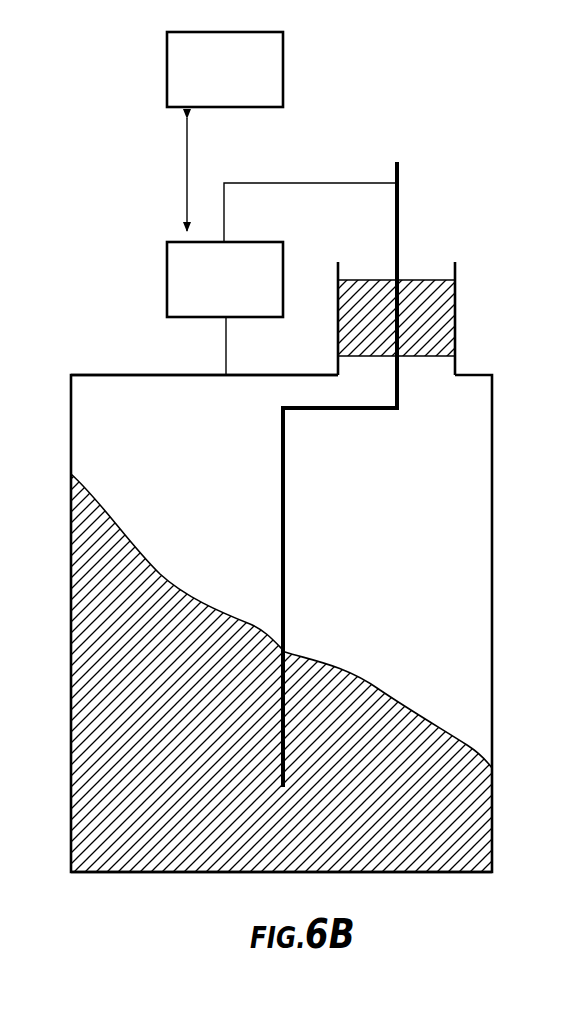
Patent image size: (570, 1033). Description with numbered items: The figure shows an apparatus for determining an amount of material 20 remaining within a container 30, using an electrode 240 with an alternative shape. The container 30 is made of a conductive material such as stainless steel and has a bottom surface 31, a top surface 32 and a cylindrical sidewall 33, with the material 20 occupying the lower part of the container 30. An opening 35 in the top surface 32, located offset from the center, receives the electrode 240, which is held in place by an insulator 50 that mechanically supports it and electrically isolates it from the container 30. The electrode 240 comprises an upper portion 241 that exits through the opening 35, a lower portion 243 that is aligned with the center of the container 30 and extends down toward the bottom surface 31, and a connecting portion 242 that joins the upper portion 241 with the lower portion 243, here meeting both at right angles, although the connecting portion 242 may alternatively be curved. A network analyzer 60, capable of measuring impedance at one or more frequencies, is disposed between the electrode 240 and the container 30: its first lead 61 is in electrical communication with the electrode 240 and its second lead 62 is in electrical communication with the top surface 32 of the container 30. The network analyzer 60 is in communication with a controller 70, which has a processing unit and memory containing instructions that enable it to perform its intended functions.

The material 20 is at (267, 673).
The container 30 is at (314, 623).
The bottom surface 31 is at (281, 897).
The top surface 32 is at (204, 354).
The cylindrical sidewall 33 is at (265, 608).
The opening 35 is at (425, 282).
The insulator 50 is at (419, 314).
The network analyzer 60 is at (225, 217).
The first lead 61 is at (310, 194).
The second lead 62 is at (244, 346).
The controller 70 is at (225, 69).
The electrode 240 is at (346, 474).
The upper portion 241 is at (437, 302).
The connecting portion 242 is at (345, 432).
The lower portion 243 is at (255, 597).